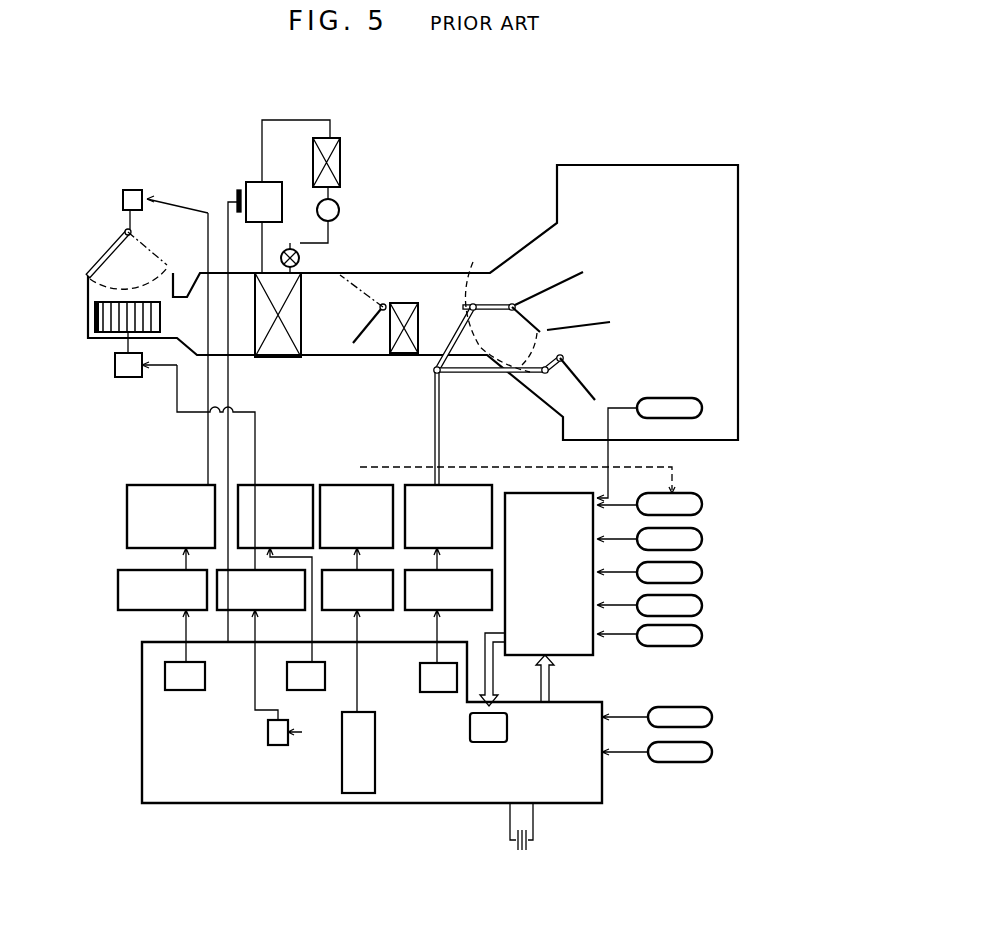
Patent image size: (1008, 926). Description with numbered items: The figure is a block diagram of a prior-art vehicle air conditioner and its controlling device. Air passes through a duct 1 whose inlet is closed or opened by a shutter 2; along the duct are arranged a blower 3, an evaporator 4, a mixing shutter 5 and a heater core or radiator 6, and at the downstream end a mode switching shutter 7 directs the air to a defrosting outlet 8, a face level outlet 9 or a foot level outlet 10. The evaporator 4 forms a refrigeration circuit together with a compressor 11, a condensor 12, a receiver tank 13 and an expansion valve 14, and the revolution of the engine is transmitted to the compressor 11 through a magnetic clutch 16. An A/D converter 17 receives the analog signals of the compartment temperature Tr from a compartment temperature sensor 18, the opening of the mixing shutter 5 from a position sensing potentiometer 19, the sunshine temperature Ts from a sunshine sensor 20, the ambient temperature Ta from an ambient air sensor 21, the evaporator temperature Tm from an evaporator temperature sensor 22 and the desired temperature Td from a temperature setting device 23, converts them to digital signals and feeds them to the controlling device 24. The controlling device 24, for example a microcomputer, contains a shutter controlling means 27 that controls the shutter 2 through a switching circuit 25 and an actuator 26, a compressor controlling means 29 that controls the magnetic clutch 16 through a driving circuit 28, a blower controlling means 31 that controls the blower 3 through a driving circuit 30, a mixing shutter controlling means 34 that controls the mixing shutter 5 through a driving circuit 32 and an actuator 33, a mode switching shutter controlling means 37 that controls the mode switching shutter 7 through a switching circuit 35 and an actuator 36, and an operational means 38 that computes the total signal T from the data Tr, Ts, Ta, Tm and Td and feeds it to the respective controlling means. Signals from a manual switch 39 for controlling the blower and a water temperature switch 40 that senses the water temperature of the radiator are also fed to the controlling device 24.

The duct 1 is at (413, 273).
The shutter 2 is at (105, 245).
The blower 3 is at (95, 315).
The evaporator 4 is at (298, 314).
The mixing shutter 5 is at (355, 345).
The heater core 6 is at (420, 333).
The mode switching shutter 7 is at (479, 302).
The defrosting outlet 8 is at (556, 260).
The face level outlet 9 is at (589, 344).
The foot level outlet 10 is at (565, 399).
The compressor 11 is at (252, 180).
The condensor 12 is at (340, 150).
The receiver tank 13 is at (337, 209).
The expansion valve 14 is at (300, 259).
The magnetic clutch 16 is at (232, 198).
The A/D converter 17 is at (553, 493).
The compartment temperature sensor 18 is at (683, 398).
The position sensing potentiometer 19 is at (702, 504).
The sunshine sensor 20 is at (702, 539).
The ambient air sensor 21 is at (702, 572).
The evaporator temperature sensor 22 is at (702, 605).
The temperature setting device 23 is at (702, 634).
The controlling device 24 is at (602, 782).
The switching circuit 25 is at (118, 598).
The actuator 26 is at (172, 485).
The shutter controlling means 27 is at (183, 690).
The driving circuit 28 is at (233, 612).
The compressor controlling means 29 is at (269, 746).
The driving circuit 30 is at (288, 485).
The blower controlling means 31 is at (305, 690).
The driving circuit 32 is at (375, 610).
The actuator 33 is at (340, 485).
The mixing shutter controlling means 34 is at (375, 761).
The switching circuit 35 is at (454, 611).
The actuator 36 is at (455, 485).
The mode switching shutter controlling means 37 is at (420, 682).
The operational means 38 is at (507, 732).
The manual switch 39 is at (712, 717).
The water temperature switch 40 is at (712, 752).